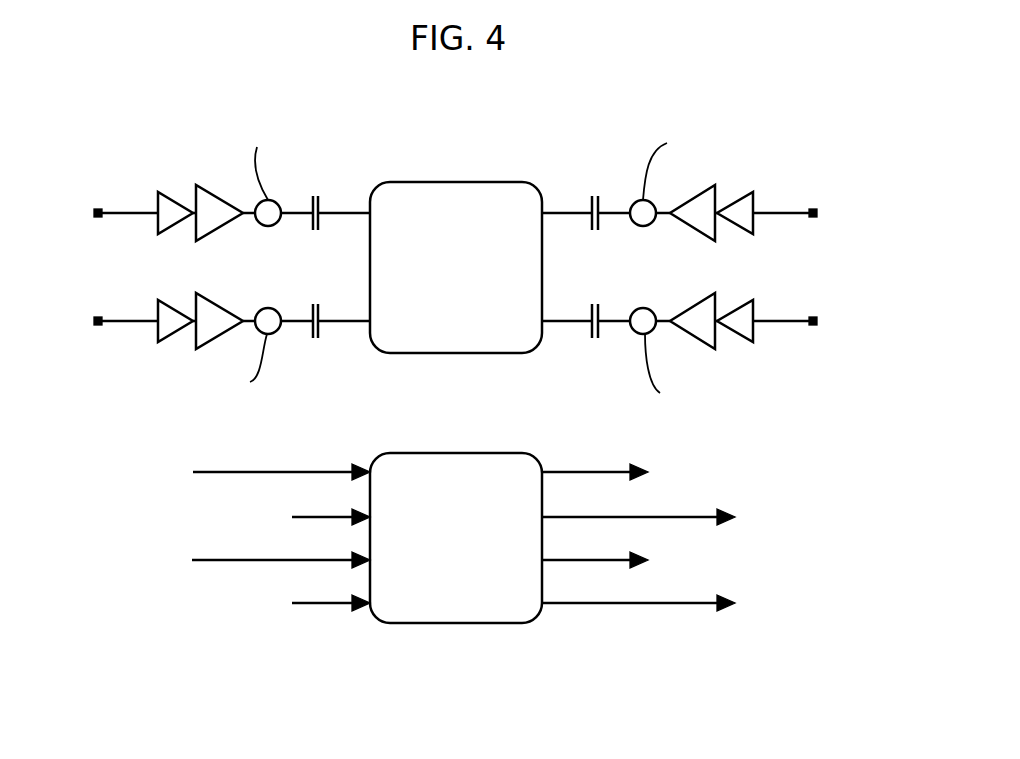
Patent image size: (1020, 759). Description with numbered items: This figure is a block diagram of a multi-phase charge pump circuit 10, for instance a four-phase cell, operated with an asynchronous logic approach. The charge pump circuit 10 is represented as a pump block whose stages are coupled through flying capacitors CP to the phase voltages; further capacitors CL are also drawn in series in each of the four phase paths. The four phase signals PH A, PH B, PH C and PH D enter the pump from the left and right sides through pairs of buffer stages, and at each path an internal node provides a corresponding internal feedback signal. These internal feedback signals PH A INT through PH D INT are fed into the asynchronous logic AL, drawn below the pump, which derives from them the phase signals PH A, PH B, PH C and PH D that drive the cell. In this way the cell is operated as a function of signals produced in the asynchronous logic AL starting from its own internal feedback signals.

The multi-phase charge pump circuit 10 is at (575, 162).
The asynchronous logic AL is at (467, 612).
The load capacitor CL is at (630, 260).
The flying capacitor CP is at (320, 335).